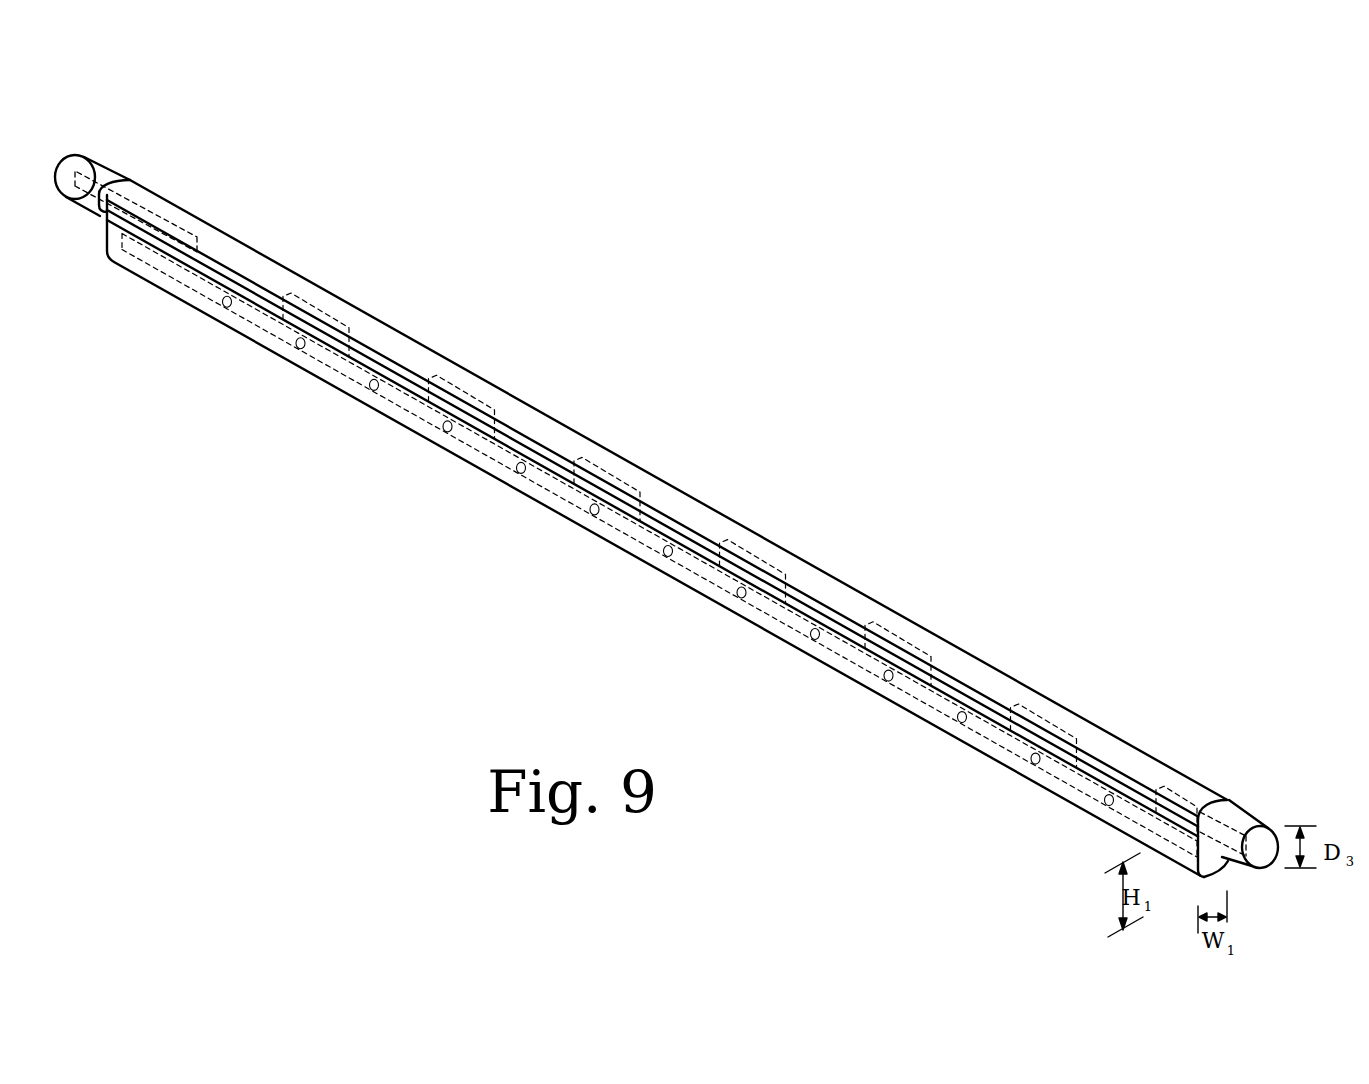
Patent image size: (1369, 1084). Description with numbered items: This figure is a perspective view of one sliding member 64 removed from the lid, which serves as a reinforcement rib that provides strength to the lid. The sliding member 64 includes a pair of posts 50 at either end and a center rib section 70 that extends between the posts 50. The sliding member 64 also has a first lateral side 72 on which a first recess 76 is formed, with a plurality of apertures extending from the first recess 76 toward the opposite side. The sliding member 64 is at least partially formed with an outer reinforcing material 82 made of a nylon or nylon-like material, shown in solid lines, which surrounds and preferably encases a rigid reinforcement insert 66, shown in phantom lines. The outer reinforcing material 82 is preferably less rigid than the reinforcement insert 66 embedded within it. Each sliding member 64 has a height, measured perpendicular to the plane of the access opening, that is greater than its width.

The post 50 is at (76, 164).
The sliding member 64 is at (641, 389).
The reinforcement insert 66 is at (591, 456).
The center rib section 70 is at (468, 374).
The first lateral side 72 is at (378, 398).
The first recess 76 is at (300, 320).
The outer reinforcing material 82 is at (730, 528).